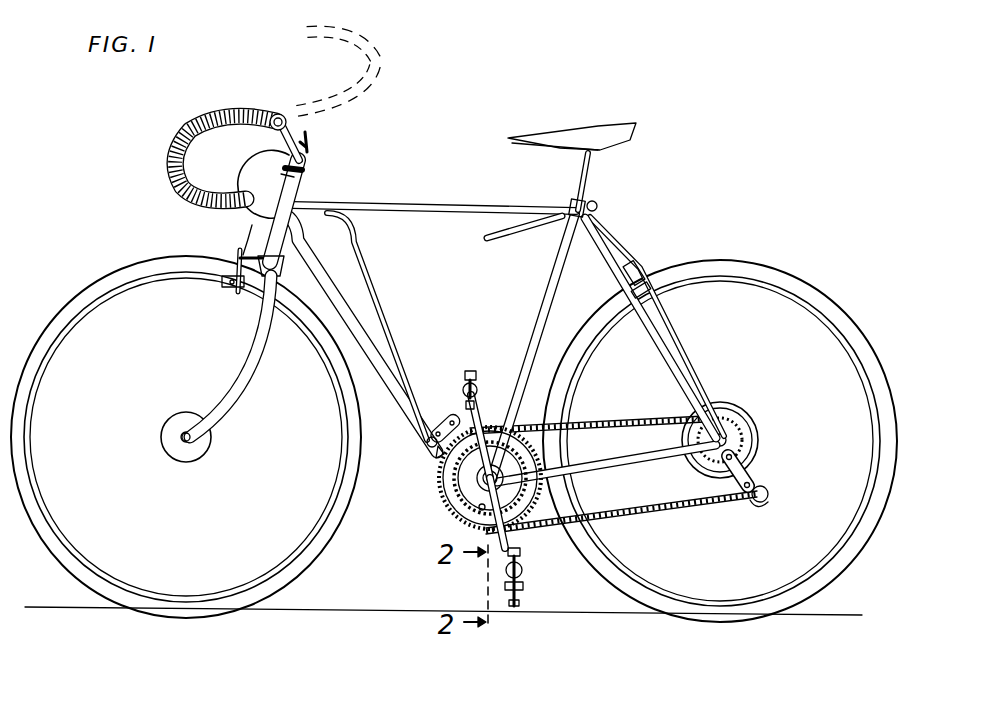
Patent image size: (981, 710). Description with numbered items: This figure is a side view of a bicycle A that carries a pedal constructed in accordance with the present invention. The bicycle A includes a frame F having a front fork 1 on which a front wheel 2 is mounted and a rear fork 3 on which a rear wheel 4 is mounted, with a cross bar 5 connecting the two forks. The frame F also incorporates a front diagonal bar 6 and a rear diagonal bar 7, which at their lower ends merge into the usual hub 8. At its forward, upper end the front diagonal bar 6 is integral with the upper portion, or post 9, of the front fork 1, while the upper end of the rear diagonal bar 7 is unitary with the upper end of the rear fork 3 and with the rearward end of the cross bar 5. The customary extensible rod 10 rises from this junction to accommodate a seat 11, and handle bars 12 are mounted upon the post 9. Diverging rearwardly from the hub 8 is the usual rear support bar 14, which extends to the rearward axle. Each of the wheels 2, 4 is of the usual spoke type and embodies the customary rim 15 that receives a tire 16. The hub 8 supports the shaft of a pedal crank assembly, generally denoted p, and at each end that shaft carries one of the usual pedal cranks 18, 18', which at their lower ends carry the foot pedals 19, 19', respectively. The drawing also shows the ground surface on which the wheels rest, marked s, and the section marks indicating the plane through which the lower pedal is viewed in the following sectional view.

The front fork 1 is at (248, 348).
The front wheel 2 is at (95, 325).
The rear fork 3 is at (675, 352).
The rear wheel 4 is at (730, 441).
The cross bar 5 is at (468, 206).
The front diagonal bar 6 is at (326, 372).
The rear diagonal bar 7 is at (537, 314).
The hub 8 is at (477, 480).
The post 9 is at (288, 196).
The extensible rod 10 is at (592, 150).
The seat 11 is at (570, 125).
The handle bars 12 is at (220, 124).
The rear support bar 14 is at (620, 462).
The rim 15 is at (828, 556).
The tire 16 is at (878, 505).
The pedal crank 18 is at (489, 415).
The foot pedal 19 is at (448, 374).
The pedal crank 18' is at (532, 529).
The foot pedal 19' is at (547, 579).
The frame F is at (420, 192).
The bicycle A is at (612, 216).
The pedal crank assembly p is at (490, 486).
The ground surface s is at (540, 613).